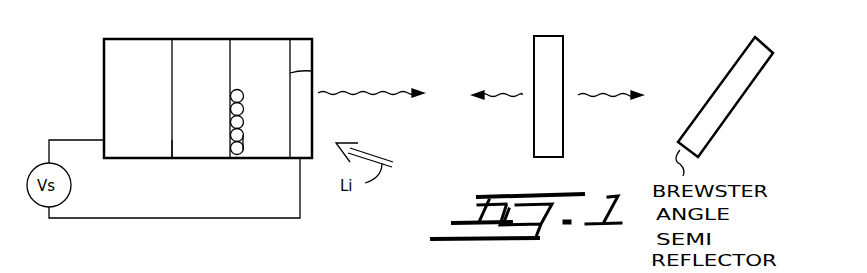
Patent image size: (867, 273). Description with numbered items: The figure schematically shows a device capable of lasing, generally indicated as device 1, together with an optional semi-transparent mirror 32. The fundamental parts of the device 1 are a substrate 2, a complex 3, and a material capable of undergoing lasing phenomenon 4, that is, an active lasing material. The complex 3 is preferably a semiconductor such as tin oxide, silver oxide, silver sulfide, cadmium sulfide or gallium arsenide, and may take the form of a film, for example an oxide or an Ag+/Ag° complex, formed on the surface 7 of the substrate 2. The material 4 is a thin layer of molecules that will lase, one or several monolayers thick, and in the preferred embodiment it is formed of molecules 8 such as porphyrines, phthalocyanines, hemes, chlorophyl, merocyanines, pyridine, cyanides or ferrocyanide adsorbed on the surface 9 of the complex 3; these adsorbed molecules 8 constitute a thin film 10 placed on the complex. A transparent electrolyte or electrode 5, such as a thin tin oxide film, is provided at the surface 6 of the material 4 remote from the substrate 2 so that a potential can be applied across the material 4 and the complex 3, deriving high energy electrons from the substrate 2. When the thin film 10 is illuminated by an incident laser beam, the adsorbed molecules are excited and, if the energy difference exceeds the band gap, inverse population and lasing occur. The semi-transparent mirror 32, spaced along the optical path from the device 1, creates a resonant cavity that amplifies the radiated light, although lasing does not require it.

The device capable of lasing 1 is at (326, 55).
The substrate 2 is at (125, 47).
The complex 3 is at (188, 47).
The material capable of undergoing lasing phenomenon 4 is at (256, 47).
The transparent electrolyte or electrode 5 is at (299, 45).
The surface of the material 6 is at (312, 71).
The surface of the substrate 7 is at (172, 145).
The molecules 8 is at (244, 136).
The surface of the complex 9 is at (238, 152).
The thin film of adsorbed molecules 10 is at (277, 148).
The semi-transparent mirror 32 is at (563, 58).